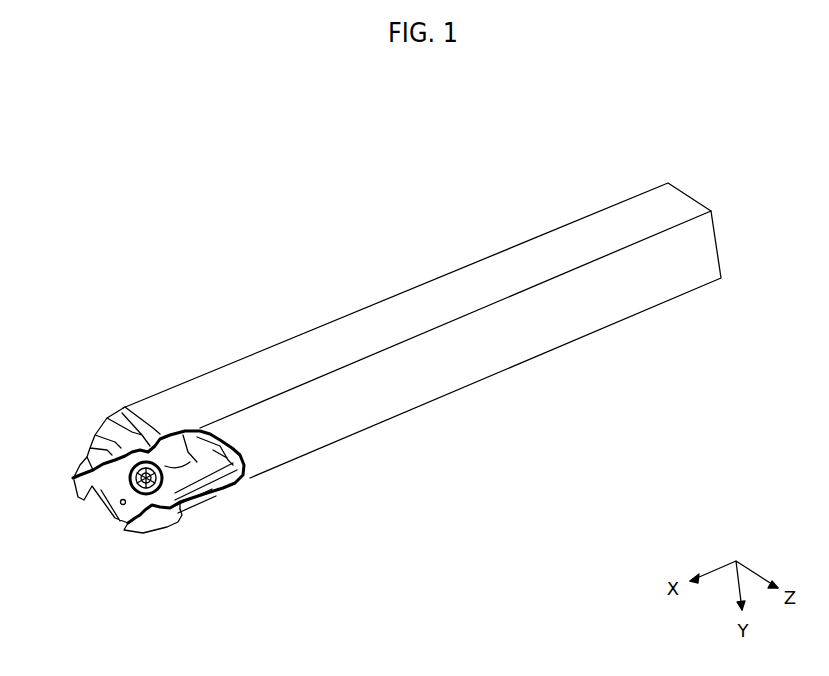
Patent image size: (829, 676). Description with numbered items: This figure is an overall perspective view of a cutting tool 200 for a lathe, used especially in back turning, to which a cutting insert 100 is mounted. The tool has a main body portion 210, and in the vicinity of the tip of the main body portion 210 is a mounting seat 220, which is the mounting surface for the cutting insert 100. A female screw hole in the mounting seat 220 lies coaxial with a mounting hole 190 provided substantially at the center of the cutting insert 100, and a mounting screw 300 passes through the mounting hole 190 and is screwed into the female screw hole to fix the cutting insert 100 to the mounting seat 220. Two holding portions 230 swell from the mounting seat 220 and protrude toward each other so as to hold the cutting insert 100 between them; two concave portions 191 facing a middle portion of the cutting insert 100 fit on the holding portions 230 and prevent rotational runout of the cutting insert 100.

The cutting insert 100 is at (112, 500).
The mounting hole 190 is at (193, 468).
The concave portions 191 is at (90, 471).
The cutting tool 200 is at (372, 399).
The main body portion 210 is at (350, 327).
The mounting seat 220 is at (245, 478).
The holding portions 230 is at (148, 418).
The mounting screw 300 is at (163, 480).